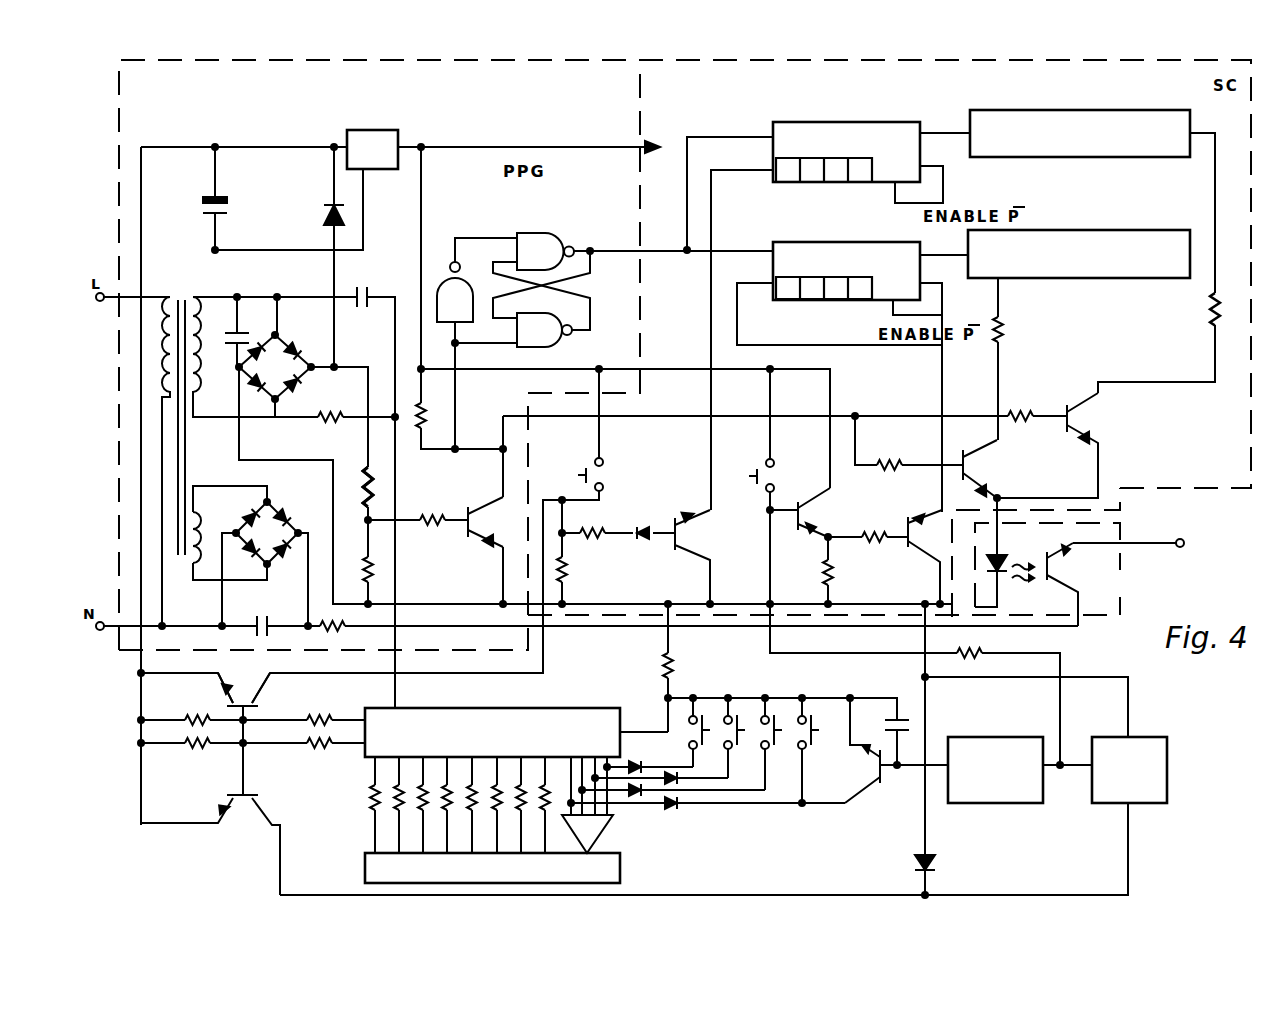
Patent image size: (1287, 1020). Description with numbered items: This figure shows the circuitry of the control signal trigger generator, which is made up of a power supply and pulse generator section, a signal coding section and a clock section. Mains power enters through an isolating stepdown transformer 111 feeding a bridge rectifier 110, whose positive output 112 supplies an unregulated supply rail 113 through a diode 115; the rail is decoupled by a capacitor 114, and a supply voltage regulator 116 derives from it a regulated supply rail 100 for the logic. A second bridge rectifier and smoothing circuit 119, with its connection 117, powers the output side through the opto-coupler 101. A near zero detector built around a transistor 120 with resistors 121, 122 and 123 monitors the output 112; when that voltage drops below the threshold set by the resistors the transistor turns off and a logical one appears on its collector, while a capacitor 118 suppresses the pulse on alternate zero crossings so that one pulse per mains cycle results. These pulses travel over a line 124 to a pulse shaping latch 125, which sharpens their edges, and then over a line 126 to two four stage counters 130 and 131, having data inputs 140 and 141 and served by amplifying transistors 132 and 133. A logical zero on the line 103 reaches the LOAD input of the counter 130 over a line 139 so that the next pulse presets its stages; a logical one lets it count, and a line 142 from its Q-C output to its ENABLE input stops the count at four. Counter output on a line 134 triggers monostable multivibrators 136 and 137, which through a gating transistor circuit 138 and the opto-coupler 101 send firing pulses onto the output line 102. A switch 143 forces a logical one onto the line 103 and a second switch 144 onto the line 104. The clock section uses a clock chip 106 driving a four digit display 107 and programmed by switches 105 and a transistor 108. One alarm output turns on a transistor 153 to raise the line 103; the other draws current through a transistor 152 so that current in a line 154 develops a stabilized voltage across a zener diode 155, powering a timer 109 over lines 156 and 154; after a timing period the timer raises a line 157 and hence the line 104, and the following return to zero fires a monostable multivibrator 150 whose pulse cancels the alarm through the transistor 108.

The regulated supply rail 100 is at (644, 147).
The opto-coupler 101 is at (1120, 601).
The output line 102 is at (1176, 541).
The line 103 is at (543, 665).
The line 104 is at (768, 653).
The input switches 105 is at (790, 691).
The clock chip 106 is at (600, 708).
The display 107 is at (621, 865).
The transistor 108 is at (862, 792).
The timer 109 is at (1167, 776).
The bridge rectifier 110 is at (290, 346).
The isolating stepdown transformer 111 is at (180, 299).
The positive output 112 is at (337, 367).
The unregulated supply rail 113 is at (270, 145).
The capacitor 114 is at (229, 202).
The diode 115 is at (322, 222).
The supply voltage regulator 116 is at (398, 136).
The connection line 117 is at (280, 460).
The capacitor 118 is at (244, 312).
The second bridge rectifier and smoothing circuit 119 is at (290, 558).
The transistor 120 is at (486, 544).
The resistor 121 is at (364, 467).
The resistor 122 is at (372, 574).
The resistor 123 is at (425, 518).
The line 124 is at (484, 458).
The pulse shaping latch 125 is at (462, 350).
The line 126 is at (592, 248).
The counter 130 is at (820, 144).
The counter 131 is at (821, 275).
The amplifying transistor 132 is at (700, 526).
The amplifying transistor 133 is at (908, 532).
The line 134 is at (944, 130).
The monostable multivibrator 136 is at (1080, 110).
The monostable multivibrator 137 is at (1084, 230).
The gating transistor circuit 138 is at (1060, 478).
The line 139 is at (715, 238).
The data input 140 is at (808, 183).
The preset inputs 141 is at (858, 302).
The line 142 is at (943, 203).
The switch 143 is at (576, 472).
The pushbutton switch 144 is at (748, 472).
The monostable multivibrator 150 is at (1010, 737).
The transistor 152 is at (268, 812).
The transistor 153 is at (264, 691).
The line 154 is at (760, 895).
The zener diode 155 is at (908, 860).
The line 156 is at (1128, 706).
The line 157 is at (1060, 772).